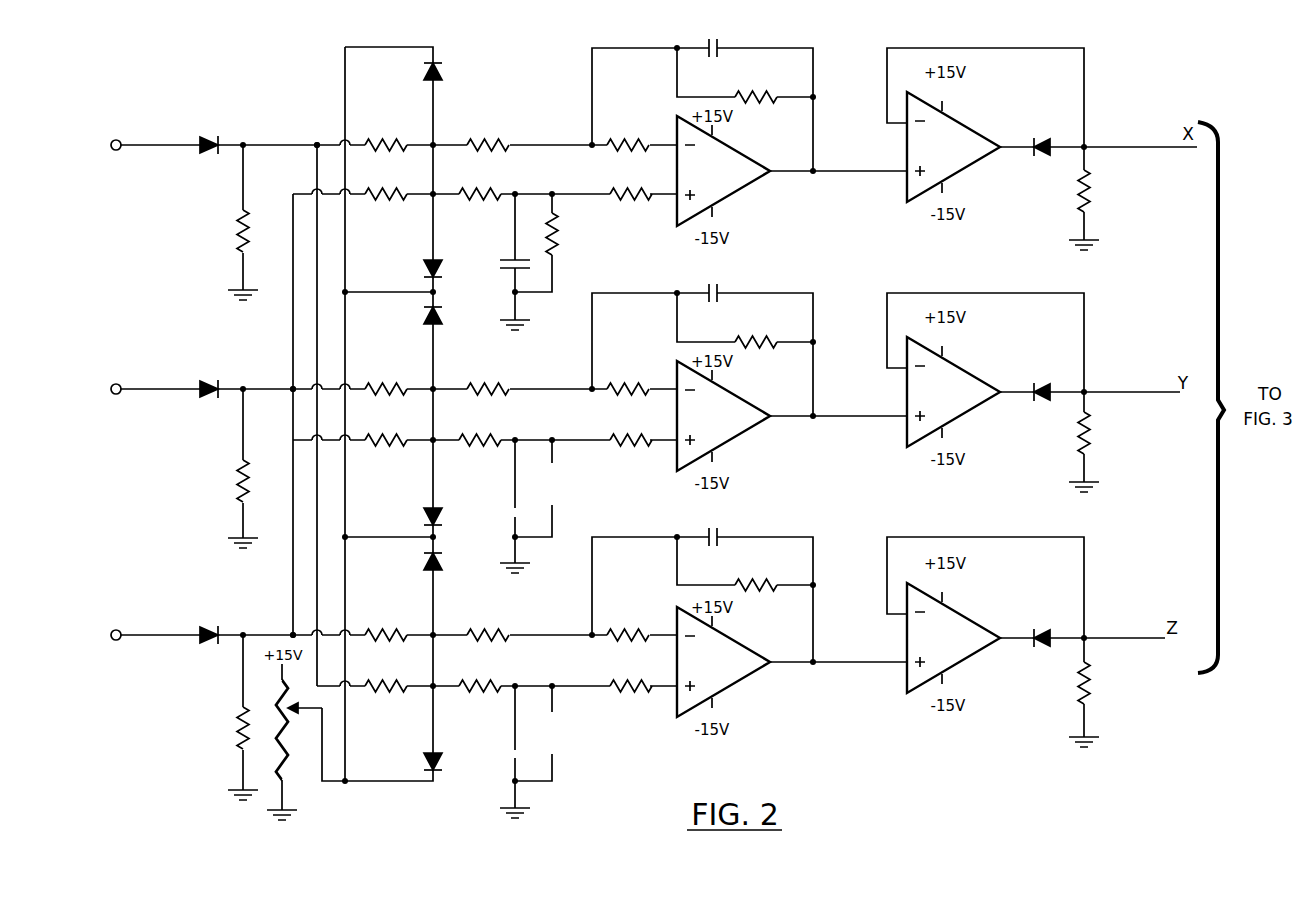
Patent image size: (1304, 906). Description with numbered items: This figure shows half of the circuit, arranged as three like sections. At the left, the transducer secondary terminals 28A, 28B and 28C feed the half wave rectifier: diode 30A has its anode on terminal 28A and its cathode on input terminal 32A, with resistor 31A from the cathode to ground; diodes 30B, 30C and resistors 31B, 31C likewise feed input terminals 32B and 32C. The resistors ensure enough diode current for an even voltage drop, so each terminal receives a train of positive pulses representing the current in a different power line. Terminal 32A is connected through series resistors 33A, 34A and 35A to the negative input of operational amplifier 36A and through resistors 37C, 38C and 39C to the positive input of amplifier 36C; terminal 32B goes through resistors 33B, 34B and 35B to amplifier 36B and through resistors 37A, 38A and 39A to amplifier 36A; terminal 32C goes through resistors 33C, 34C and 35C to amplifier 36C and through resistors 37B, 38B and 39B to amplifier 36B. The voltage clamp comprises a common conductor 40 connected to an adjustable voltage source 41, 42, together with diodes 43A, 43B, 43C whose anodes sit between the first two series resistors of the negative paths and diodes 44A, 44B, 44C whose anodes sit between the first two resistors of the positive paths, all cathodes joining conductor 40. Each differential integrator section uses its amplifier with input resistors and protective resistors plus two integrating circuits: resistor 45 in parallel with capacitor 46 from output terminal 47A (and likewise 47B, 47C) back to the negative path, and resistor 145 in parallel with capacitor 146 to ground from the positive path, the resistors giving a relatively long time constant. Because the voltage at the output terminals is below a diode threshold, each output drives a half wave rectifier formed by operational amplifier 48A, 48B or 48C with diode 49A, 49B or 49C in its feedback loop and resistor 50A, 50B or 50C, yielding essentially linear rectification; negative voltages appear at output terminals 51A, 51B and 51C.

The secondary terminal 28A is at (113, 141).
The secondary terminal 28B is at (111, 386).
The secondary terminal 28C is at (111, 635).
The diode 30A is at (215, 139).
The diode 30B is at (213, 394).
The diode 30C is at (212, 642).
The resistor 31A is at (240, 232).
The resistor 31B is at (240, 492).
The resistor 31C is at (237, 731).
The input terminal 32A is at (315, 144).
The input terminal 32B is at (290, 388).
The input terminal 32C is at (290, 634).
The series resistor 33A is at (388, 141).
The series resistor 33B is at (388, 389).
The series resistor 33C is at (385, 634).
The input resistor 34A is at (489, 144).
The input resistor 34B is at (491, 388).
The input resistor 34C is at (488, 634).
The protective resistor 35A is at (630, 142).
The protective resistor 35B is at (629, 387).
The protective resistor 35C is at (630, 634).
The operational amplifier 36A is at (752, 167).
The operational amplifier 36B is at (732, 396).
The operational amplifier 36C is at (732, 642).
The series resistor 37A is at (381, 192).
The series resistor 37B is at (384, 438).
The series resistor 37C is at (372, 684).
The input resistor 38A is at (488, 192).
The input resistor 38B is at (484, 438).
The input resistor 38C is at (482, 684).
The protective resistor 39A is at (636, 192).
The protective resistor 39B is at (634, 438).
The protective resistor 39C is at (636, 685).
The common conductor 40 is at (345, 70).
The adjustable voltage source 41 is at (278, 692).
The adjustable voltage source 42 is at (290, 770).
The diode 43A is at (446, 71).
The diode 43B is at (426, 312).
The diode 43C is at (426, 562).
The diode 44A is at (426, 268).
The diode 44B is at (428, 509).
The diode 44C is at (438, 768).
The resistor 45 is at (760, 96).
The capacitor 46 is at (718, 42).
The output terminal 47A is at (813, 173).
The output terminal 47B is at (813, 418).
The output terminal 47C is at (813, 664).
The operational amplifier 48A is at (970, 132).
The operational amplifier 48B is at (968, 368).
The operational amplifier 48C is at (968, 626).
The diode 49A is at (1038, 155).
The diode 49B is at (1036, 400).
The diode 49C is at (1034, 646).
The resistor 50A is at (1089, 190).
The resistor 50B is at (1094, 430).
The resistor 50C is at (1087, 680).
The output terminal 51A is at (1086, 145).
The output terminal 51B is at (1086, 390).
The output terminal 51C is at (1086, 637).
The resistor 145 is at (556, 236).
The capacitor 146 is at (510, 258).